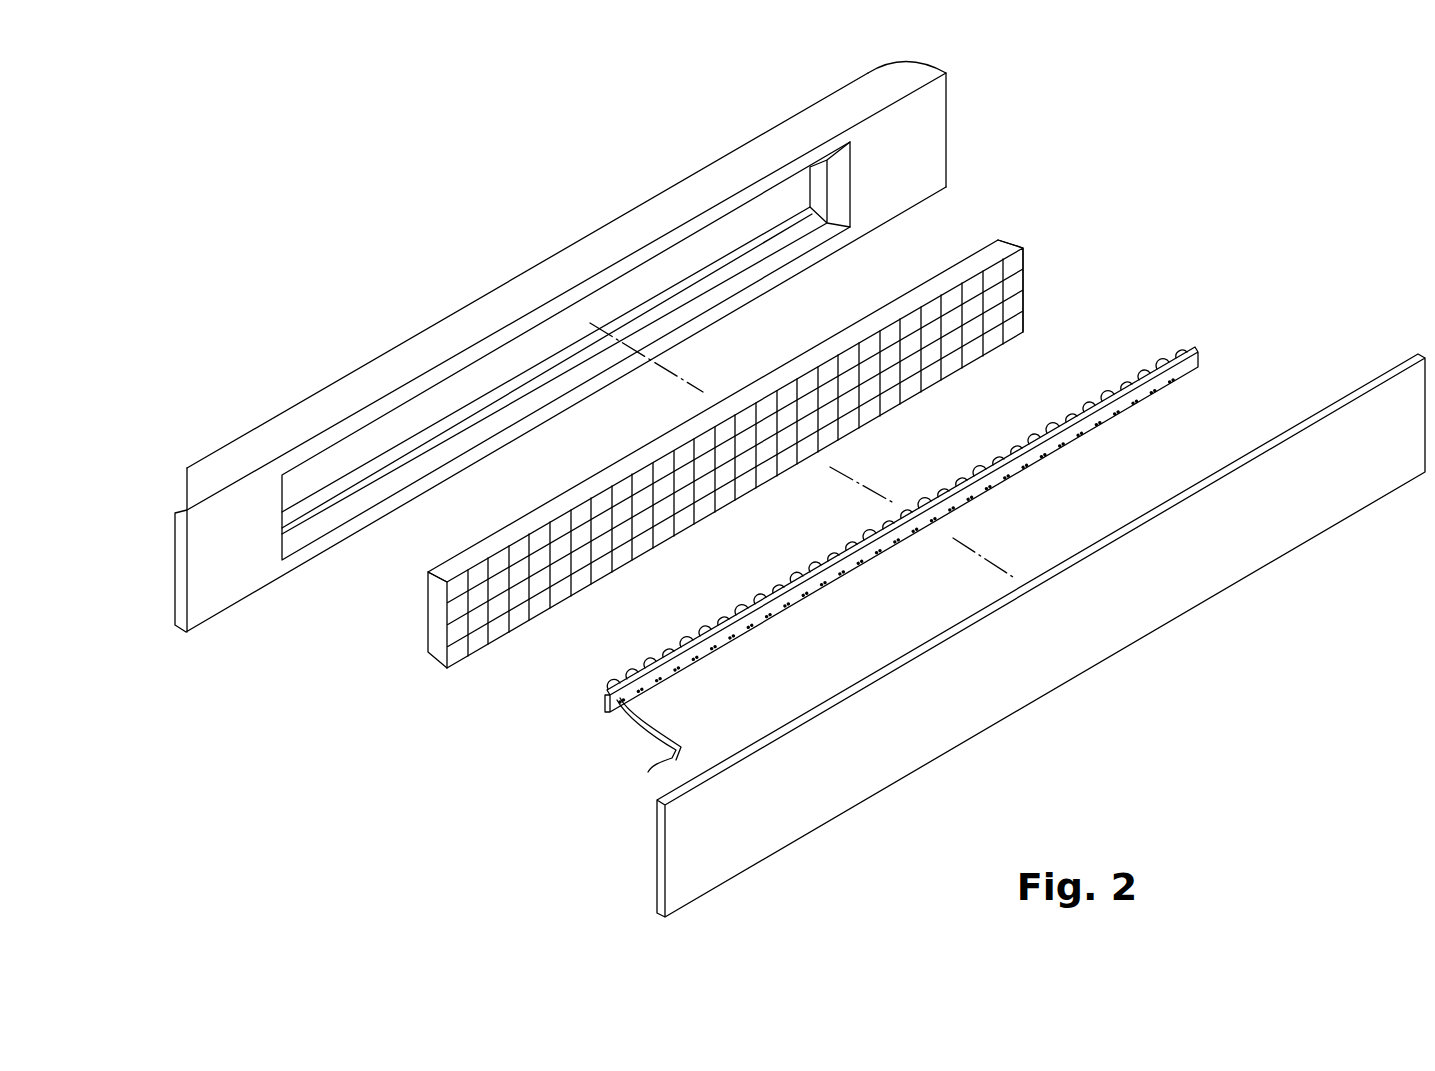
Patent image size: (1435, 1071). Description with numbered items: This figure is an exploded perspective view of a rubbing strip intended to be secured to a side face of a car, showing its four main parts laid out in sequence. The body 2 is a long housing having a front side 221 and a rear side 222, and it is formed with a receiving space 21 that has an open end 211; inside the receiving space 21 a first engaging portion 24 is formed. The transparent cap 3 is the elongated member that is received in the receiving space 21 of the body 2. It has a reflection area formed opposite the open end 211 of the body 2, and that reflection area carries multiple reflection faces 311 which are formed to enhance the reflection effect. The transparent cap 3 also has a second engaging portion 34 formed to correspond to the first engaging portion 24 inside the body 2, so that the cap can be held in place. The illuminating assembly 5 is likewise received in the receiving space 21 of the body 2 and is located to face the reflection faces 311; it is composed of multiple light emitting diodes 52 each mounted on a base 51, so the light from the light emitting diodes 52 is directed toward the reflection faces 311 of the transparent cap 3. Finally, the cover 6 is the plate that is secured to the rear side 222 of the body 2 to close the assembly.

The body 2 is at (616, 347).
The receiving space 21 is at (320, 468).
The open end 211 is at (398, 444).
The front side 221 is at (630, 210).
The rear side 222 is at (928, 110).
The first engaging portion 24 is at (723, 278).
The transparent cap 3 is at (766, 448).
The reflection faces 311 is at (1017, 265).
The second engaging portion 34 is at (435, 648).
The illuminating assembly 5 is at (948, 504).
The base 51 is at (1200, 367).
The light emitting diodes 52 is at (1138, 383).
The cover 6 is at (1318, 512).